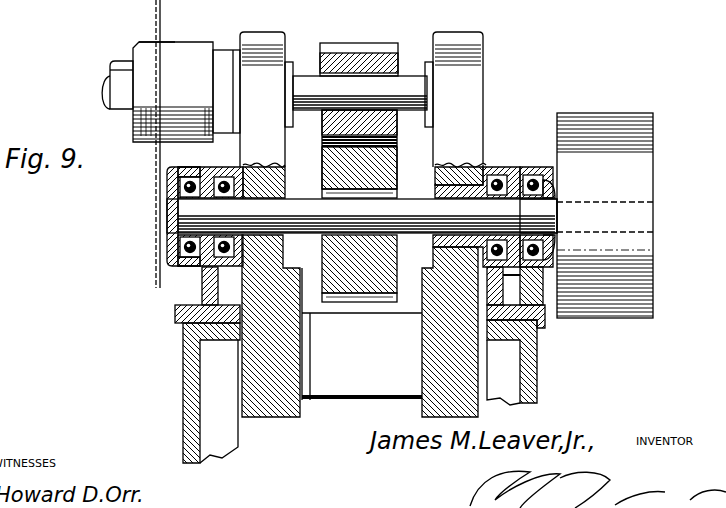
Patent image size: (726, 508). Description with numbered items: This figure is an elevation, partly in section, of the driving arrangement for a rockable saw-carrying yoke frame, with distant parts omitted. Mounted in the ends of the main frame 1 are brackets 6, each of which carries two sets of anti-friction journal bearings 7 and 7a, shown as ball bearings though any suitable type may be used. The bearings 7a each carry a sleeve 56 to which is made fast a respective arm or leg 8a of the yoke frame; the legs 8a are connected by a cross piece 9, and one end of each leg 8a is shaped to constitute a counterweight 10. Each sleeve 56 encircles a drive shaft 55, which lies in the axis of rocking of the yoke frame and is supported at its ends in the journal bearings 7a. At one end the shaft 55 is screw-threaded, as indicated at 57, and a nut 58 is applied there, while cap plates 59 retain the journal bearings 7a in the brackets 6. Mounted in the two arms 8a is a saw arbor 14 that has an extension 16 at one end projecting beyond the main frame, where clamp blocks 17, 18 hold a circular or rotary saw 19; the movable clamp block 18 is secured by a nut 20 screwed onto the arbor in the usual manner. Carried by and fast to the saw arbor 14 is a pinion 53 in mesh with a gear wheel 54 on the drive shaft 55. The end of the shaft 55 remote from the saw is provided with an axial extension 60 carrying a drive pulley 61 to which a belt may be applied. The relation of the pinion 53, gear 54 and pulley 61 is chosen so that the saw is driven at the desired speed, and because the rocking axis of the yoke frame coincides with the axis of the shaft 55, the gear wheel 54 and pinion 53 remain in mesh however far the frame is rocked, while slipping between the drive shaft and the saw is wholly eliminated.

The main frame 1 is at (193, 372).
The bracket 6 is at (176, 313).
The anti-friction journal bearing 7 is at (207, 276).
The anti-friction journal bearing 7a is at (172, 262).
The arm or leg of yoke frame 8a is at (363, 115).
The cross piece 9 is at (362, 334).
The counterweight 10 is at (275, 416).
The saw arbor 14 is at (360, 93).
The extension 16 is at (100, 88).
The clamp block 17 is at (186, 92).
The movable clamp block 18 is at (148, 47).
The circular or rotary saw 19 is at (156, 158).
The nut 20 is at (117, 68).
The pinion 53 is at (367, 50).
The gear wheel 54 is at (391, 274).
The drive shaft 55 is at (362, 216).
The sleeve 56 is at (435, 189).
The screw-threaded end 57 is at (168, 220).
The nut 58 is at (172, 238).
The cap plate 59 is at (167, 195).
The axial extension 60 is at (547, 210).
The drive pulley 61 is at (643, 163).